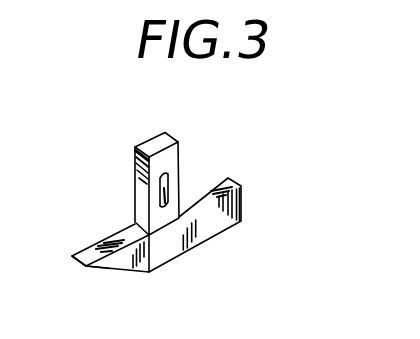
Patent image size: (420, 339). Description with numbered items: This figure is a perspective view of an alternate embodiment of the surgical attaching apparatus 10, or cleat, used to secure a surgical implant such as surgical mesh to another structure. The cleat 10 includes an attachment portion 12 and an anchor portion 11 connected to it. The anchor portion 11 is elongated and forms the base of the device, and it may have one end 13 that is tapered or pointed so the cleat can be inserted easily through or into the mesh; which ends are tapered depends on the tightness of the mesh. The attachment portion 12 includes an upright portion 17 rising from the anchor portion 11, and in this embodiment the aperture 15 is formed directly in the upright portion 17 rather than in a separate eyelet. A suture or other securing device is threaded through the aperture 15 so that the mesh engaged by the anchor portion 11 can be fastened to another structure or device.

The surgical attaching apparatus 10 is at (163, 192).
The anchor portion 11 is at (163, 247).
The attachment portion 12 is at (149, 164).
The end 13 is at (75, 286).
The aperture 15 is at (204, 150).
The upright portion 17 is at (109, 180).